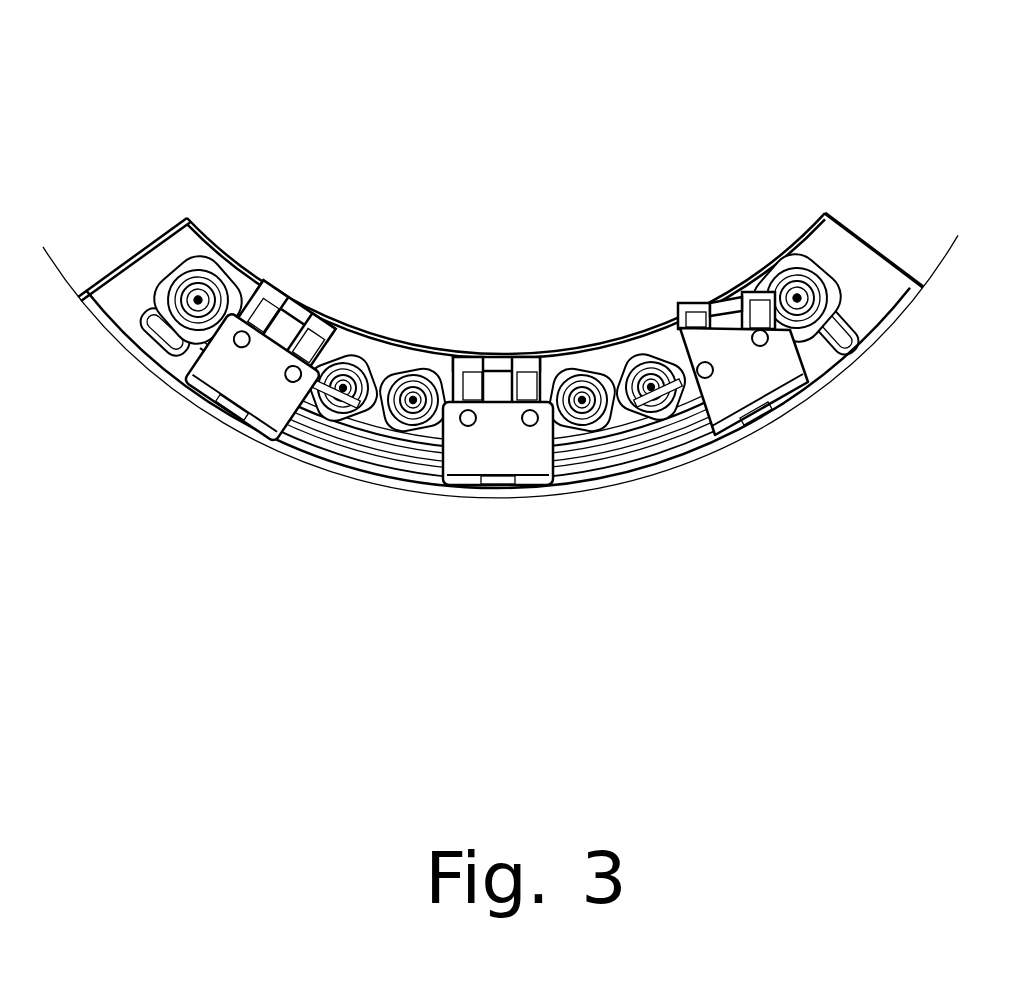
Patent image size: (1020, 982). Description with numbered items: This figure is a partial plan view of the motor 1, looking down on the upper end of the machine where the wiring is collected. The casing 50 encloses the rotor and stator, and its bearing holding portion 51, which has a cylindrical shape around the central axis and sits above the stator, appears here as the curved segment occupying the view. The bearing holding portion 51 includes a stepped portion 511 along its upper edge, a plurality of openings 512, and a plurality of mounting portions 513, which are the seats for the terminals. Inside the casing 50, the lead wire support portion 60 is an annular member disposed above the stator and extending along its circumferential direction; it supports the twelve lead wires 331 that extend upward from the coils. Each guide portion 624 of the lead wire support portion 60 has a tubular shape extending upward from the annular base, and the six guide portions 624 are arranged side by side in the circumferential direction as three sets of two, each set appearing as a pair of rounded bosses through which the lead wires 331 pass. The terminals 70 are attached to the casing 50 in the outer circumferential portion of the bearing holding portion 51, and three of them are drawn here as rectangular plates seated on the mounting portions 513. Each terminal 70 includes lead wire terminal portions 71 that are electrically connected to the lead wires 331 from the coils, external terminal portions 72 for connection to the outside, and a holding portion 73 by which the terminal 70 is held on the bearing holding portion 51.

The motor 1 is at (398, 83).
The casing 50 is at (329, 180).
The bearing holding portion 51 is at (86, 343).
The stepped portion 511 is at (172, 247).
The opening 512 is at (140, 330).
The mounting portion 513 is at (197, 406).
The lead wire support portion 60 is at (641, 439).
The guide portion 624 is at (217, 280).
The lead wire 331 is at (412, 395).
The lead wire terminal portion 71 is at (388, 405).
The terminal 70 is at (300, 300).
The external terminal portion 72 is at (518, 408).
The holding portion 73 is at (232, 410).